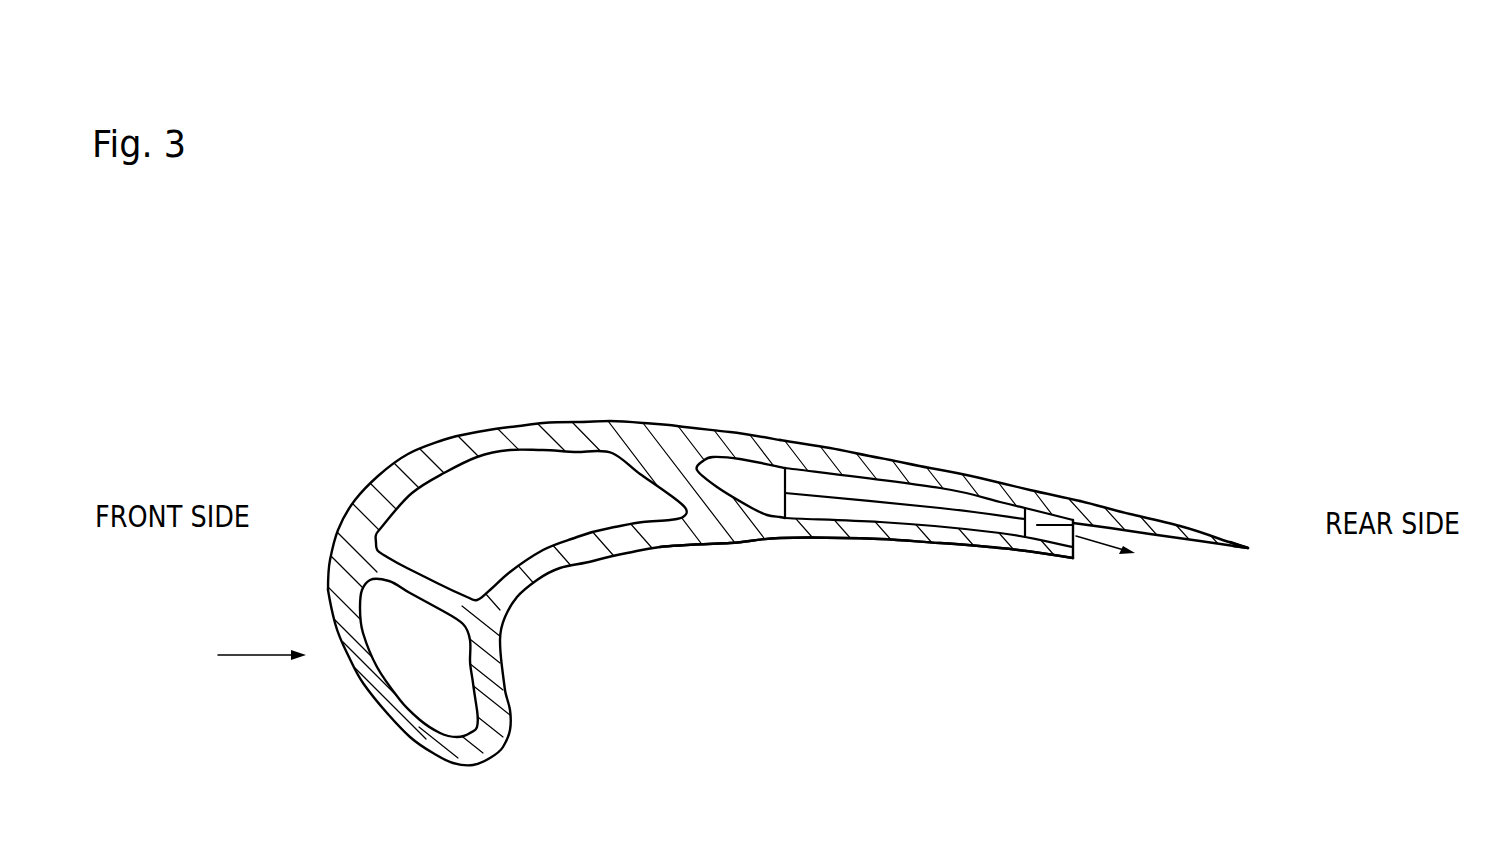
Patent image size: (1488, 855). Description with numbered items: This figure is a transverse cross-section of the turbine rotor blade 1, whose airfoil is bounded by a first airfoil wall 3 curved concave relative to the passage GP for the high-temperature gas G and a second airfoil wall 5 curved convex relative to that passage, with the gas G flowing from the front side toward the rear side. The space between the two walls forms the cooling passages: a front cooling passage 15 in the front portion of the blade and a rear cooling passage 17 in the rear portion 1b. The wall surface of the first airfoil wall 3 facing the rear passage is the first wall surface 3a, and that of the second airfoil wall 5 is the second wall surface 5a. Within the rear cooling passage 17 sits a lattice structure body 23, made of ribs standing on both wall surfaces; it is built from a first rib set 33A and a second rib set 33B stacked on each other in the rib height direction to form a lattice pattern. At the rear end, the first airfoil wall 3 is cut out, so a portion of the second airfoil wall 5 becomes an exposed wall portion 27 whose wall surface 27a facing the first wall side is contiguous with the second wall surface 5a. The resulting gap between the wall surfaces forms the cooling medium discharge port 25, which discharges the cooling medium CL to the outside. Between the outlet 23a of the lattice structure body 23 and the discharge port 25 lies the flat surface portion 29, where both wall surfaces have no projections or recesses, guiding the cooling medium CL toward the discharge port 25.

The turbine rotor blade 1 is at (388, 465).
The rear portion 1b is at (982, 478).
The first airfoil wall 3 is at (859, 567).
The first wall surface 3a is at (880, 521).
The second airfoil wall 5 is at (930, 457).
The second wall surface 5a is at (806, 474).
The front cooling passage 15 is at (538, 488).
The rear cooling passage 17 is at (730, 475).
The lattice structure body 23 is at (922, 583).
The outlet 23a is at (1033, 527).
The cooling medium discharge port 25 is at (1078, 537).
The exposed wall portion 27 is at (1160, 540).
The wall surface 27a is at (1200, 547).
The flat surface portion 29 is at (1032, 518).
The first rib set 33A is at (797, 505).
The second rib set 33B is at (845, 487).
The high-temperature gas G is at (262, 654).
The cooling medium CL is at (1107, 545).
The passage GP is at (707, 793).